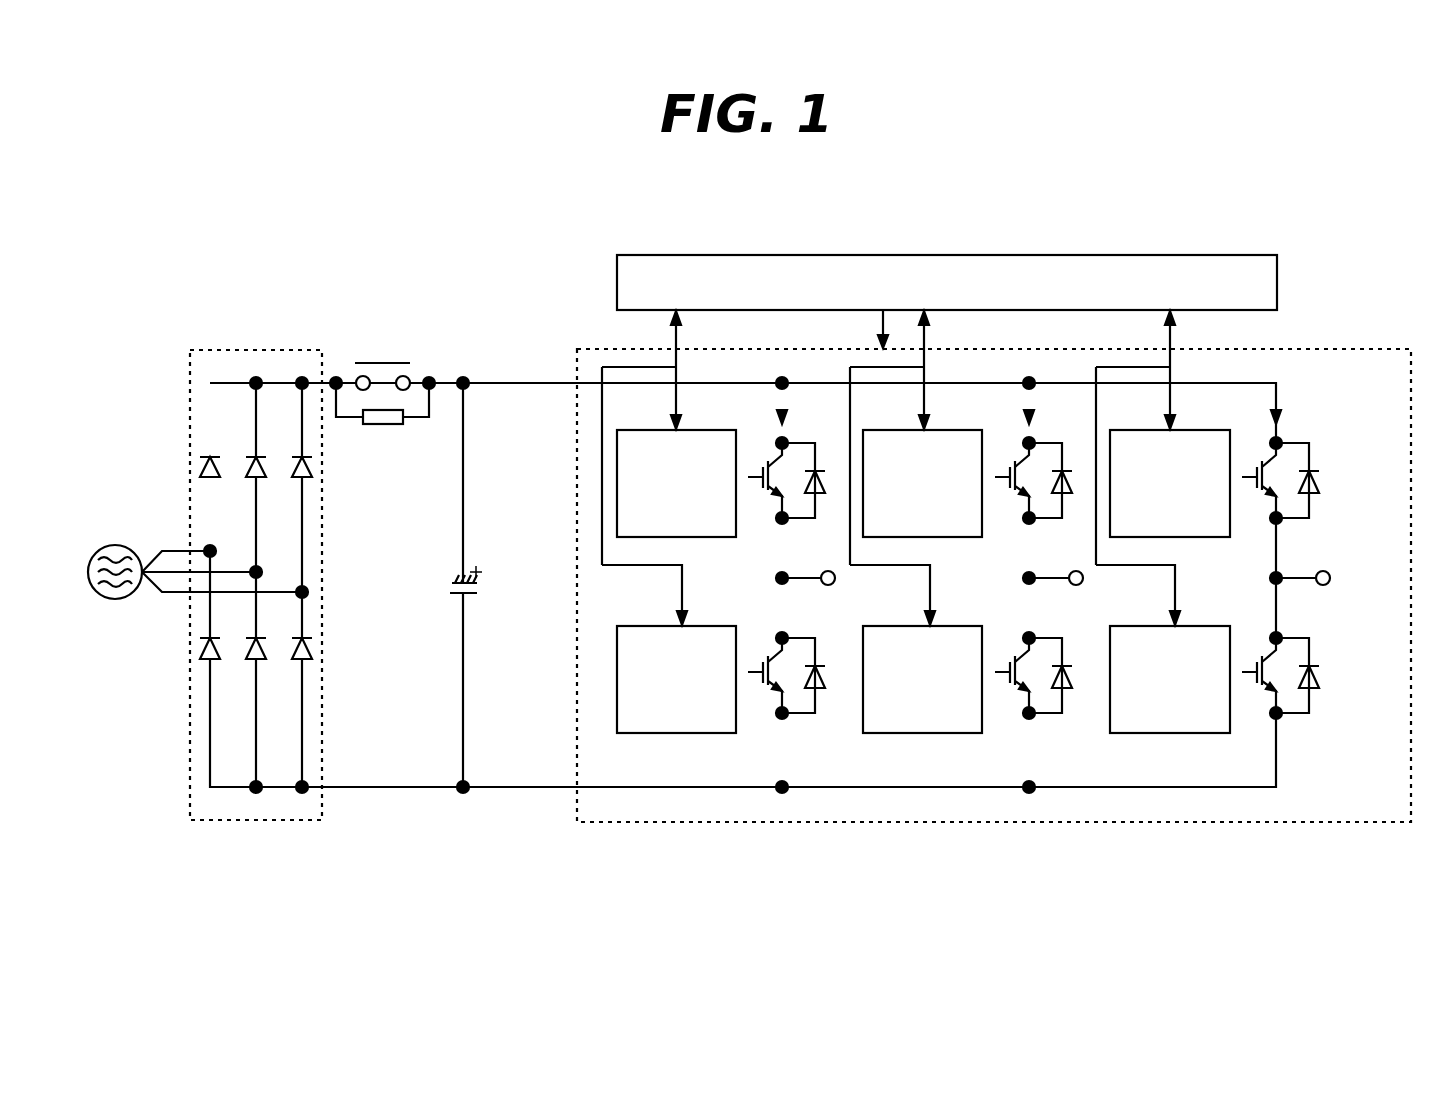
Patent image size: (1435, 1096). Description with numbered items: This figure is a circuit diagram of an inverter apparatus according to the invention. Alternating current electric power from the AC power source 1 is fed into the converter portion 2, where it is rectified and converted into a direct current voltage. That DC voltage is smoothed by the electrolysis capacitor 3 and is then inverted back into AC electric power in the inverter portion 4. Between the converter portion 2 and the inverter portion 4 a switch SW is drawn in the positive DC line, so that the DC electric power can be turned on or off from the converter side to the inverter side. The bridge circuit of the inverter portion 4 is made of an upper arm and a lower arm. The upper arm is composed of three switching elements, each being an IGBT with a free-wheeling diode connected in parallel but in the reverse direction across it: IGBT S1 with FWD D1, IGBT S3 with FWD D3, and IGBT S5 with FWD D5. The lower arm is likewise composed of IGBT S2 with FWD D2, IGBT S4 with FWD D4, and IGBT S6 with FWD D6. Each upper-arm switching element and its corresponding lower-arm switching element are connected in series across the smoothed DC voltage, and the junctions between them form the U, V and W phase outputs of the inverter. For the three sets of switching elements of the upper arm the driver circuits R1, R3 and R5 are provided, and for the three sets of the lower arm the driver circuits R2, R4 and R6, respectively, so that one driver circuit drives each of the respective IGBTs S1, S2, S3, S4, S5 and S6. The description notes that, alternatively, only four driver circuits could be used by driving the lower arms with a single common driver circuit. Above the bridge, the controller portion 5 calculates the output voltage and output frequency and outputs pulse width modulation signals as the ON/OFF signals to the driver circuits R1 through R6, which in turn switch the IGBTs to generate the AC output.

The AC power source 1 is at (115, 545).
The converter portion 2 is at (190, 421).
The electrolysis capacitor 3 is at (446, 601).
The inverter portion 4 is at (994, 594).
The controller portion 5 is at (1280, 286).
The switch SW is at (385, 354).
The driver circuit R1 is at (702, 427).
The driver circuit R2 is at (676, 733).
The driver circuit R3 is at (949, 427).
The driver circuit R4 is at (922, 733).
The driver circuit R5 is at (1196, 427).
The driver circuit R6 is at (1170, 733).
The IGBT S1 is at (765, 462).
The IGBT S2 is at (765, 660).
The IGBT S3 is at (1012, 462).
The IGBT S4 is at (1012, 660).
The IGBT S5 is at (1259, 462).
The IGBT S6 is at (1259, 660).
The FWD D1 is at (822, 462).
The FWD D2 is at (820, 704).
The FWD D3 is at (1069, 462).
The FWD D4 is at (1067, 704).
The FWD D5 is at (1316, 462).
The FWD D6 is at (1314, 704).